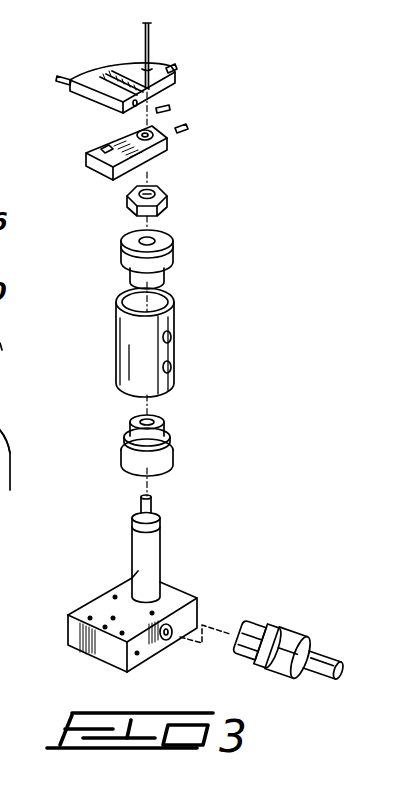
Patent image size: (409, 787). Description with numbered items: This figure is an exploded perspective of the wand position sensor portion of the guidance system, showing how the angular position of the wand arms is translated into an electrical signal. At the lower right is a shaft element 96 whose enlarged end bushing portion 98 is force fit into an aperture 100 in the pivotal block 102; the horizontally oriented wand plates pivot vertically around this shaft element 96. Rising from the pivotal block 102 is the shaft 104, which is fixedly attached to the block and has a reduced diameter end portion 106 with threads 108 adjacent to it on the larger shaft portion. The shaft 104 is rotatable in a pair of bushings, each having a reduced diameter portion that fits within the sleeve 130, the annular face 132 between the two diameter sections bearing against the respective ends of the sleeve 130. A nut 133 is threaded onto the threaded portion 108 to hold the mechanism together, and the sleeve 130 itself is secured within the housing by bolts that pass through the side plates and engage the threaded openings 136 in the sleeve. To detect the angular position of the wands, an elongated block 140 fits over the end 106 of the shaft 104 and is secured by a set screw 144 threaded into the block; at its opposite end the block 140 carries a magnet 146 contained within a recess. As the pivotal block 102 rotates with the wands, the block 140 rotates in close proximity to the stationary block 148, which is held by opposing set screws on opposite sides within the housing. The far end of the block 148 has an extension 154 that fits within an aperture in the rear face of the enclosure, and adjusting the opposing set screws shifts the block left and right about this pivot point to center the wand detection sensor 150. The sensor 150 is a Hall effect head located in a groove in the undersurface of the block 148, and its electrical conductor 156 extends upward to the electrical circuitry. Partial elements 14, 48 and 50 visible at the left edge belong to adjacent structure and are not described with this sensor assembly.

The housing (partial, adjacent figure) 14 is at (6, 339).
The arm (partial, adjacent figure) 48 is at (7, 397).
The link (partial, adjacent figure) 50 is at (0, 471).
The shaft element 96 is at (323, 657).
The enlarged end bushing portion 98 is at (283, 628).
The aperture 100 is at (167, 641).
The pivotal block 102 is at (193, 599).
The shaft 104 is at (159, 573).
The reduced diameter end portion 106 is at (152, 504).
The threads 108 is at (137, 514).
The sleeve 130 is at (176, 313).
The annular face 132 is at (172, 437).
The nut 133 is at (128, 194).
The threaded openings 136 is at (174, 366).
The elongated block 140 is at (163, 153).
The set screw 144 is at (190, 131).
The magnet 146 is at (88, 152).
The stationary block 148 is at (150, 70).
The wand detection sensor 150 is at (77, 88).
The extension 154 is at (178, 67).
The electrical conductor 156 is at (144, 55).